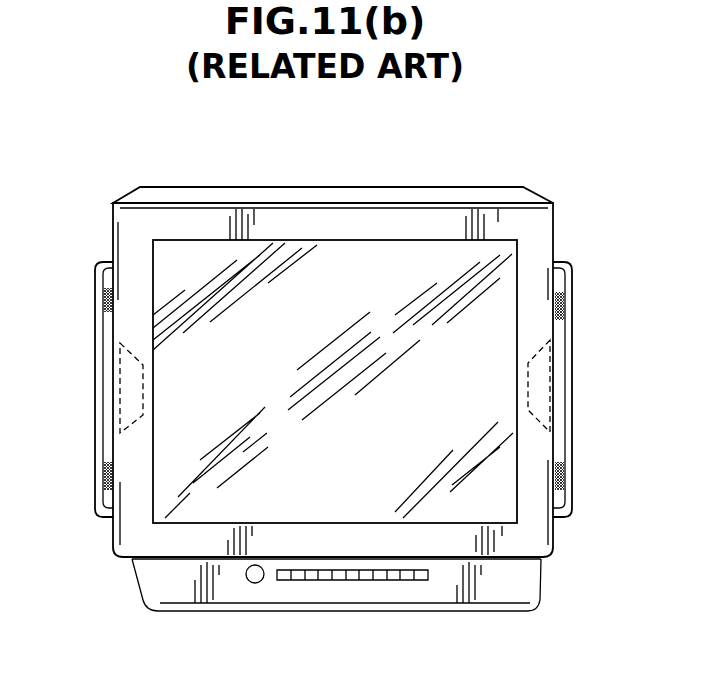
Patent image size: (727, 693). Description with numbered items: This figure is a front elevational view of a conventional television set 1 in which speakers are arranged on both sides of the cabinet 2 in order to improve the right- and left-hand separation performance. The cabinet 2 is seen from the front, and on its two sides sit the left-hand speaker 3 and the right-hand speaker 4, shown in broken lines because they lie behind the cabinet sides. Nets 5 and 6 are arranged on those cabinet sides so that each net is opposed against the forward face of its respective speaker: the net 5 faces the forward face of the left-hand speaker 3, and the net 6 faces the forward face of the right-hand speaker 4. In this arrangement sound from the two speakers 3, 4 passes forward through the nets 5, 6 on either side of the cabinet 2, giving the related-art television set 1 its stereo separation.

The television set 1 is at (370, 172).
The cabinet 2 is at (505, 196).
The left-hand speaker 3 is at (127, 393).
The right-hand speaker 4 is at (540, 393).
The net 5 is at (108, 333).
The net 6 is at (560, 350).